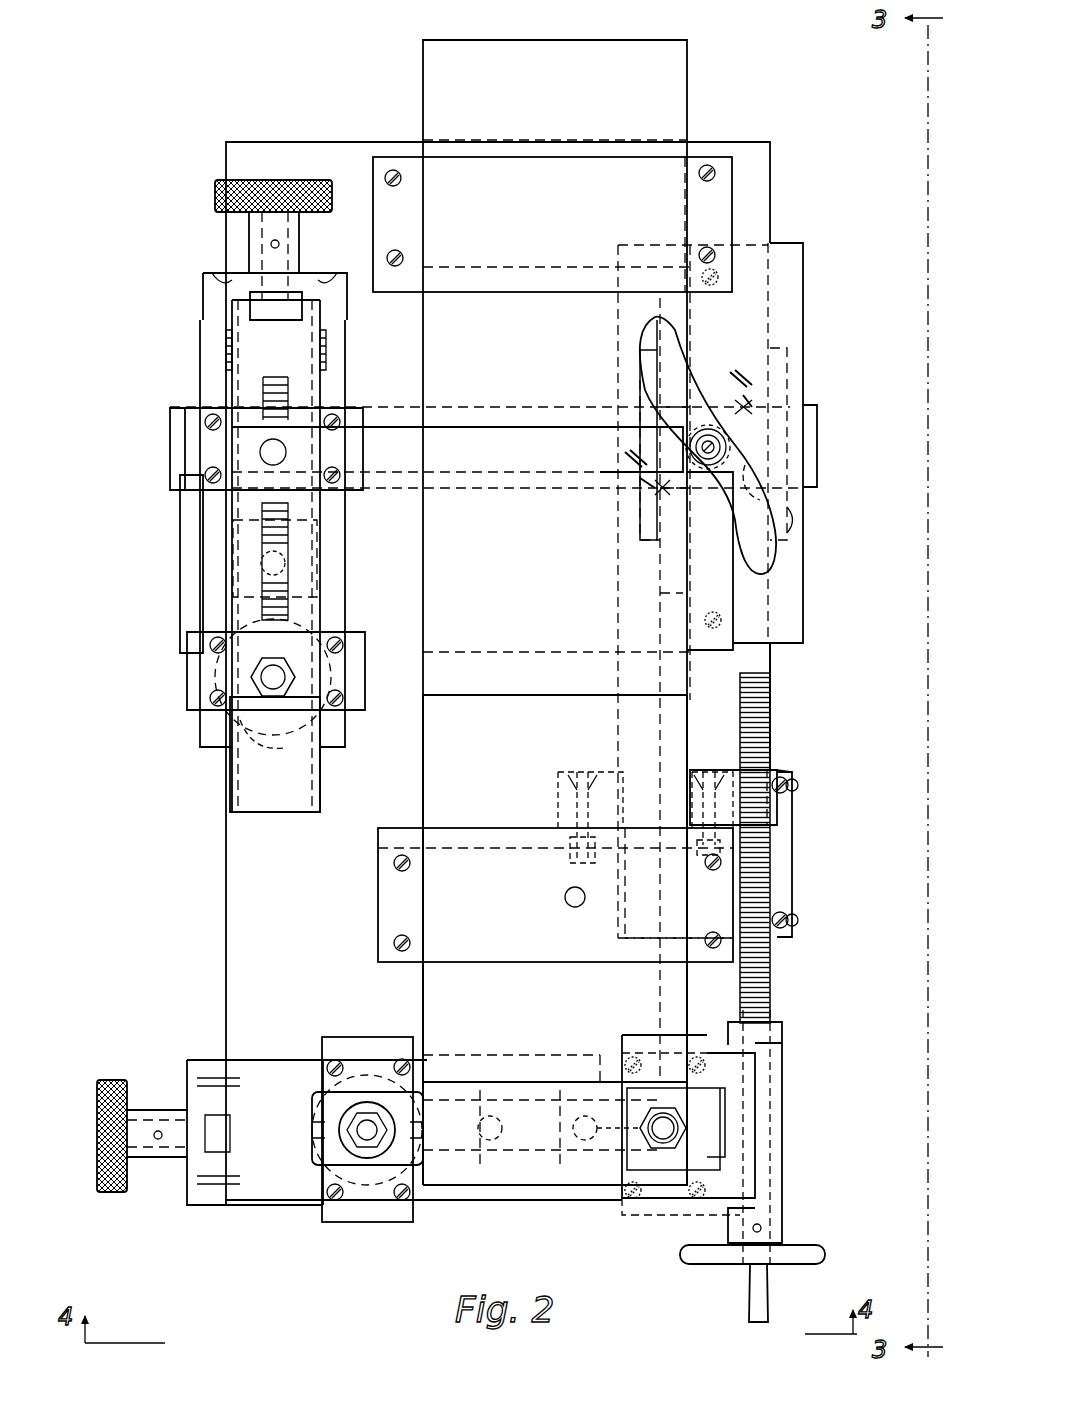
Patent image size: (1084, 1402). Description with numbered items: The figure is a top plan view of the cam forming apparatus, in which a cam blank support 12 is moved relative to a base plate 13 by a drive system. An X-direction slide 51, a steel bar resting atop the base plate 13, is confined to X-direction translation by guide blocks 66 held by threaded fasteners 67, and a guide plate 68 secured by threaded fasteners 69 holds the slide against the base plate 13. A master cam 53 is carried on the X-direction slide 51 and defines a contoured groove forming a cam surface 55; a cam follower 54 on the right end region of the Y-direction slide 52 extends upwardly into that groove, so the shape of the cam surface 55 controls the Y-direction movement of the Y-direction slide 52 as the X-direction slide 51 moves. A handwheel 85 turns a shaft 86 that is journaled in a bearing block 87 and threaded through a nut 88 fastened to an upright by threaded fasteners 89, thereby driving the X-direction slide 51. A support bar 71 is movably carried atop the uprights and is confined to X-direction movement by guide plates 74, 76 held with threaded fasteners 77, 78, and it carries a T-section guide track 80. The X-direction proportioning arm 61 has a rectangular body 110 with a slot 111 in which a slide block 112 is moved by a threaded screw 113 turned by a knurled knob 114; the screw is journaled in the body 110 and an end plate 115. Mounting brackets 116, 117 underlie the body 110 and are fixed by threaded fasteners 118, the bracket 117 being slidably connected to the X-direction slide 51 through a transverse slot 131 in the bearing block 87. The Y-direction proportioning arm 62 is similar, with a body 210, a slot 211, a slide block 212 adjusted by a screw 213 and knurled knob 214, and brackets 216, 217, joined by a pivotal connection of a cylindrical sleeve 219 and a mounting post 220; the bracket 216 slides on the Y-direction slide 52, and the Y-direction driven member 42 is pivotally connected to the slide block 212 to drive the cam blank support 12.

The cam blank support 12 is at (462, 698).
The base plate 13 is at (235, 908).
The Y-direction driven member 42 is at (263, 562).
The X-direction slide 51 is at (772, 658).
The Y-direction slide 52 is at (818, 445).
The master cam 53 is at (808, 334).
The cam follower 54 is at (708, 427).
The cam surface 55 is at (751, 501).
The X-direction proportioning arm 61 is at (265, 1210).
The Y-direction proportioning arm 62 is at (200, 298).
The guide blocks 66 is at (642, 358).
The threaded fasteners 67 is at (796, 516).
The guide plate 68 is at (786, 867).
The threaded fasteners 69 is at (785, 772).
The support bar 71 is at (425, 766).
The guide plate 74 is at (544, 914).
The guide plate 76 is at (552, 228).
The threaded fasteners 77 is at (404, 871).
The threaded fasteners 78 is at (395, 186).
The guide track 80 is at (178, 508).
The handwheel 85 is at (750, 1300).
The shaft 86 is at (772, 995).
The bearing block 87 is at (757, 1155).
The threaded nut 88 is at (558, 797).
The threaded fasteners 89 is at (592, 777).
The body 110 is at (470, 1200).
The slot 111 is at (425, 1088).
The slide block 112 is at (615, 1112).
The threaded screw 113 is at (340, 1135).
The knurled knob 114 is at (110, 1194).
The end plate 115 is at (213, 1206).
The mounting bracket 116 is at (400, 1222).
The mounting bracket 117 is at (655, 1210).
The threaded fasteners 118 is at (400, 1060).
The slot 131 is at (620, 1160).
The body 210 is at (215, 740).
The slot 211 is at (230, 368).
The slide block 212 is at (303, 563).
The screw 213 is at (292, 380).
The knurled knob 214 is at (240, 182).
The mounting bracket 216 is at (172, 445).
The mounting bracket 217 is at (190, 702).
The cylindrical sleeve 219 is at (290, 762).
The mounting post 220 is at (300, 662).